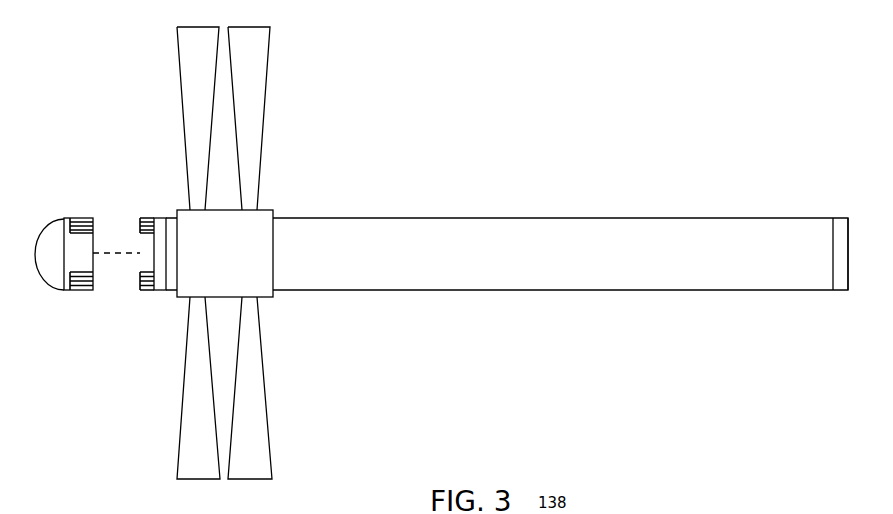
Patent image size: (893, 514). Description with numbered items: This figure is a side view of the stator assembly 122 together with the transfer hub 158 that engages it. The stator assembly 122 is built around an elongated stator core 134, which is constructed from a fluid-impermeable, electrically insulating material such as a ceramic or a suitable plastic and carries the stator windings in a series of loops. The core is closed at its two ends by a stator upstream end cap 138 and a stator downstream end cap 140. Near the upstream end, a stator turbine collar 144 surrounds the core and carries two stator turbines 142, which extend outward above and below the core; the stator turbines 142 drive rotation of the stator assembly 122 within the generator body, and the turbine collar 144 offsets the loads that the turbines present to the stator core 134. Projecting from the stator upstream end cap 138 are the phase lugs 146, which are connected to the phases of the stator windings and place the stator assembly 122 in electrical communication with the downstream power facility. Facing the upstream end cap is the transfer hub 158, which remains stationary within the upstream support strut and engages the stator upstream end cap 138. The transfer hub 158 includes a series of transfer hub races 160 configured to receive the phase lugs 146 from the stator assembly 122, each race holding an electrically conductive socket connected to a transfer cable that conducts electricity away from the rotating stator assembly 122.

The stator assembly 122 is at (480, 143).
The stator core 134 is at (333, 272).
The stator upstream end cap 138 is at (166, 297).
The stator downstream end cap 140 is at (848, 216).
The stator turbines 142 is at (188, 48).
The stator turbine collar 144 is at (253, 230).
The phase lugs 146 is at (141, 218).
The transfer hub 158 is at (46, 220).
The transfer hub races 160 is at (75, 218).